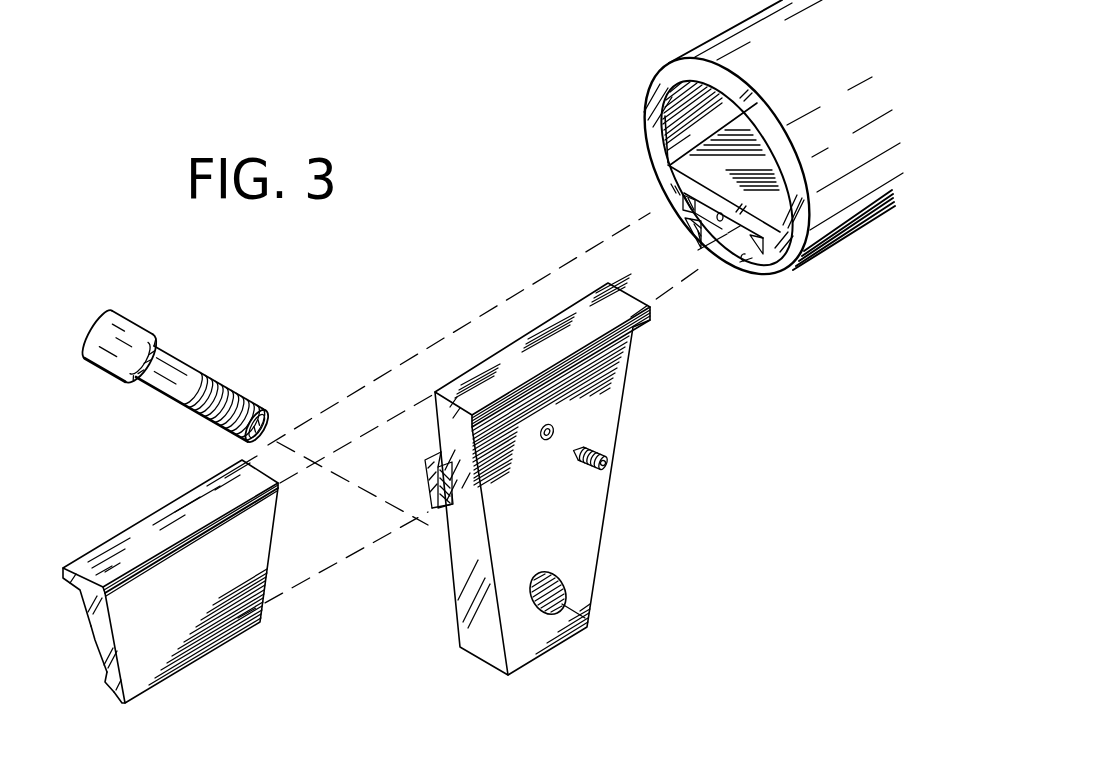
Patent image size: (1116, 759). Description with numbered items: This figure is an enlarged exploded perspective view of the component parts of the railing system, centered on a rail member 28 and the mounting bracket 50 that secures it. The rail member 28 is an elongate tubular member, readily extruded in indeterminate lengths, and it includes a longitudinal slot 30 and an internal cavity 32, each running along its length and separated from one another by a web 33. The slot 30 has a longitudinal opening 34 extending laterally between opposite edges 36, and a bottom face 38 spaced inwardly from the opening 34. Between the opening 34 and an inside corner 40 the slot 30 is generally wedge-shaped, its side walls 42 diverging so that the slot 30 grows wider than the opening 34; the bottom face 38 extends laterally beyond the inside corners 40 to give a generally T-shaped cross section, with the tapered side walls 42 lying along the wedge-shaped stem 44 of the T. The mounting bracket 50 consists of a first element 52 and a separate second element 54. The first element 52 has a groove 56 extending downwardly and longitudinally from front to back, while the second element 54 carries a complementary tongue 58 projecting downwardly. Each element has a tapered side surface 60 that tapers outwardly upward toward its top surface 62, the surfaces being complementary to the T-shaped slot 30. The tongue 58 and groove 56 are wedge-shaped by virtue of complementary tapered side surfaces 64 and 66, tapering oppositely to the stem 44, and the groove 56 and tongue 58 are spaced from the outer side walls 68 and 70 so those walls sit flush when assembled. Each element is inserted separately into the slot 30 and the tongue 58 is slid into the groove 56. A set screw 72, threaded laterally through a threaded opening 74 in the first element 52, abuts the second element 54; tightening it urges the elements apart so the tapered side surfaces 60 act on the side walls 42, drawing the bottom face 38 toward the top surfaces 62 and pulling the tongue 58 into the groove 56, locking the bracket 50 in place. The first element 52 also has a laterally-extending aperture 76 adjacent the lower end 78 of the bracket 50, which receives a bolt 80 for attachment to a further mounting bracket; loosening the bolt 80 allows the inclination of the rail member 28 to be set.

The rail member 28 is at (692, 57).
The longitudinal slot 30 is at (729, 247).
The internal cavity 32 is at (720, 110).
The web 33 is at (763, 157).
The longitudinal opening 34 is at (742, 261).
The opposite edges 36 is at (698, 250).
The bottom face 38 is at (720, 213).
The inside corner 40 is at (675, 222).
The side walls 42 is at (700, 234).
The stem 44 is at (738, 228).
The mounting bracket 50 is at (612, 529).
The first element 52 is at (598, 493).
The second element 54 is at (158, 653).
The groove 56 is at (433, 505).
The tongue 58 is at (113, 698).
The tapered side surface 60 is at (618, 347).
The top surface 62 is at (502, 355).
The tapered side surface 64 is at (450, 487).
The tapered side surface 66 is at (108, 680).
The outer side wall 68 is at (430, 478).
The outer side wall 70 is at (92, 643).
The set screw 72 is at (603, 450).
The threaded opening 74 is at (556, 432).
The laterally-extending aperture 76 is at (565, 592).
The lower end 78 is at (538, 658).
The bolt 80 is at (183, 357).